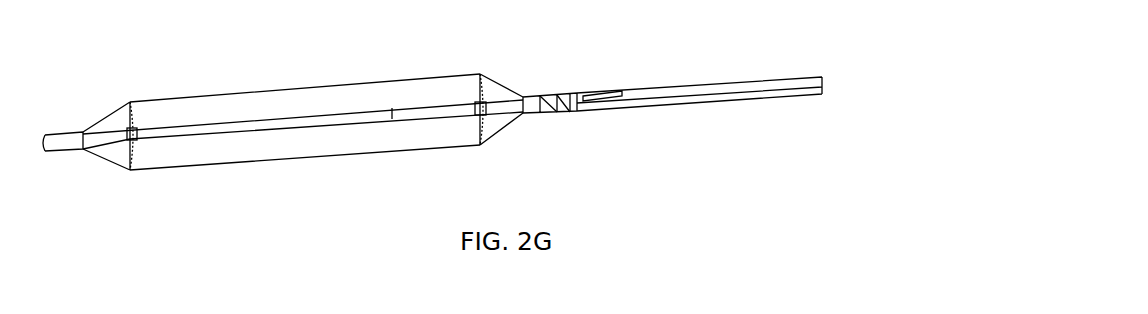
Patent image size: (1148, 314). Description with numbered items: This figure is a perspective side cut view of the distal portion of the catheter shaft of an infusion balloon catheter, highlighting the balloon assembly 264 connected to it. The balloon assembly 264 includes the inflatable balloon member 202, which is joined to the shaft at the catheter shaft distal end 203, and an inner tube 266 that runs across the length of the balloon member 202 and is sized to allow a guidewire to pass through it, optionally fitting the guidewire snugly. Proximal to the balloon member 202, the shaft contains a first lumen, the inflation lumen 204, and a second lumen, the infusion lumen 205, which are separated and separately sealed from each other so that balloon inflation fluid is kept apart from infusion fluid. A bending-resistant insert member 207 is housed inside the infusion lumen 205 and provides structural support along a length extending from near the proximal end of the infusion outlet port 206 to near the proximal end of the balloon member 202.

The inflatable balloon member 202 is at (322, 157).
The distal end of shaft 203 is at (550, 122).
The inflation lumen 204 is at (695, 102).
The infusion lumen 205 is at (677, 92).
The infusion outlet port 206 is at (598, 80).
The bending-resistant insert member 207 is at (597, 104).
The balloon assembly 264 is at (290, 68).
The inner tube 266 is at (272, 130).